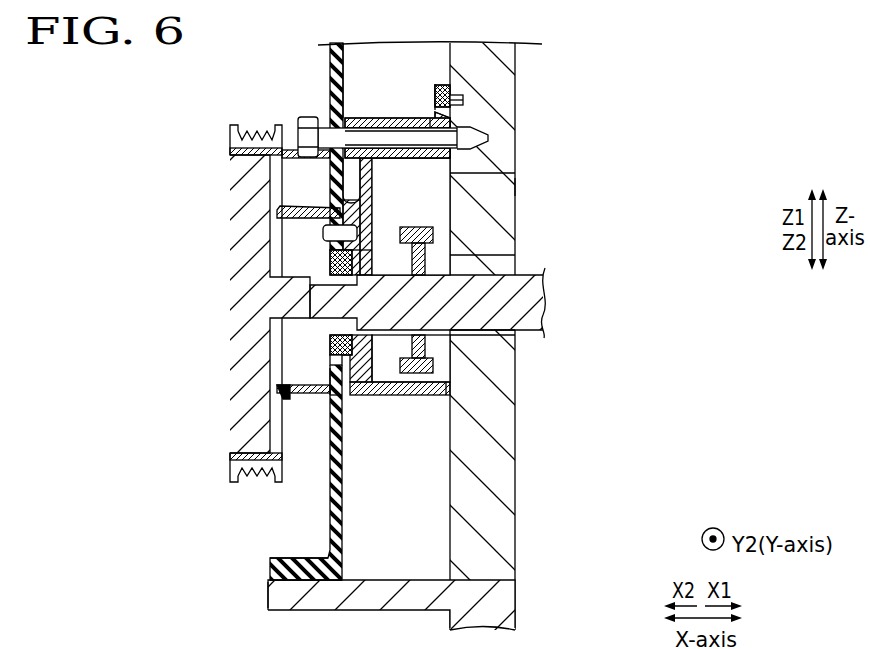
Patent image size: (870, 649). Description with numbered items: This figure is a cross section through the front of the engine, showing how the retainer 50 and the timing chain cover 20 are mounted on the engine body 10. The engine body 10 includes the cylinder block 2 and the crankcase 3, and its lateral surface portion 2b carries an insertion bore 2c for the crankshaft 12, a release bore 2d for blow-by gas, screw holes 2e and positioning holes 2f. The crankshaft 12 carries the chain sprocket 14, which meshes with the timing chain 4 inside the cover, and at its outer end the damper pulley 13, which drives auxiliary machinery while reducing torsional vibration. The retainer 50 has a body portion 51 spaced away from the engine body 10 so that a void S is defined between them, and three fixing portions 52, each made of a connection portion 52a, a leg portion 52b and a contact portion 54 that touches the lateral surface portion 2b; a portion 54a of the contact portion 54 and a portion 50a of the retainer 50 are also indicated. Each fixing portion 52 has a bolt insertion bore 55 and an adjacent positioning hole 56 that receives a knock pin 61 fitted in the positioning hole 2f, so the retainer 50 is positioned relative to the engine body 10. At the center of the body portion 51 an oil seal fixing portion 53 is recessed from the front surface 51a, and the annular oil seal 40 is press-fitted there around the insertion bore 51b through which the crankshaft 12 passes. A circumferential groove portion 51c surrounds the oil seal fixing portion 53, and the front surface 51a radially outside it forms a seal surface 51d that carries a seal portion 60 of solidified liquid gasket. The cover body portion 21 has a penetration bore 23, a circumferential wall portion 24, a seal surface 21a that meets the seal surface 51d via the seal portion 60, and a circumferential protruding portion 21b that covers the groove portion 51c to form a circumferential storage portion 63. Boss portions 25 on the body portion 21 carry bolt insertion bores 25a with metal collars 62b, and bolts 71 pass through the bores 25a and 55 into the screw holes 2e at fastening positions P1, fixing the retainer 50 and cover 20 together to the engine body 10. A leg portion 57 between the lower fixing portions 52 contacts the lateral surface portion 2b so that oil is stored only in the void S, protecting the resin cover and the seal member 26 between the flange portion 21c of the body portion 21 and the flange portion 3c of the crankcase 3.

The cylinder block 2 is at (570, 336).
The lateral surface portion 2b is at (493, 553).
The insertion bore 2c is at (498, 333).
The release bore 2d is at (517, 187).
The screw holes 2e is at (489, 137).
The positioning holes 2f is at (434, 89).
The crankcase 3 is at (394, 605).
The flange portion 3c is at (282, 598).
The timing chain 4 is at (425, 368).
The engine body 10 is at (536, 66).
The crankshaft 12 is at (510, 287).
The damper pulley 13 is at (241, 310).
The chain sprocket 14 is at (425, 347).
The timing chain cover 20 is at (279, 352).
The body portion 21 is at (279, 352).
The seal surface 21a is at (350, 397).
The circumferential protruding portion 21b is at (338, 378).
The flange portion 21c is at (267, 560).
The penetration bore 23 is at (332, 366).
The circumferential wall portion 24 is at (275, 388).
The boss portions 25 is at (314, 120).
The bolt insertion bore 25a is at (303, 140).
The seal member 26 is at (270, 580).
The oil seal 40 is at (333, 257).
The retainer 50 is at (522, 423).
The bearing holder plate 50a is at (352, 398).
The body portion 51 is at (513, 270).
The front surface 51a is at (218, 213).
The insertion bore 51b is at (435, 272).
The circumferential groove portion 51c is at (323, 240).
The seal surface 51d is at (277, 213).
The fixing portions 52 is at (272, 144).
The connection portion 52a is at (330, 172).
The leg portion 52b is at (346, 112).
The oil seal fixing portion 53 is at (340, 282).
The contact portion 54 is at (545, 115).
The mounting block arm 54a is at (453, 117).
The bolt insertion bore 55 is at (413, 156).
The positioning hole 56 is at (430, 117).
The leg portion 57 is at (447, 386).
The seal portion 60 is at (328, 383).
The knock pins 61 is at (463, 100).
The collar 62b is at (233, 156).
The circumferential storage portion 63 is at (232, 239).
The bolts 71 is at (235, 130).
The fastening positions P1 is at (399, 159).
The void S is at (432, 532).